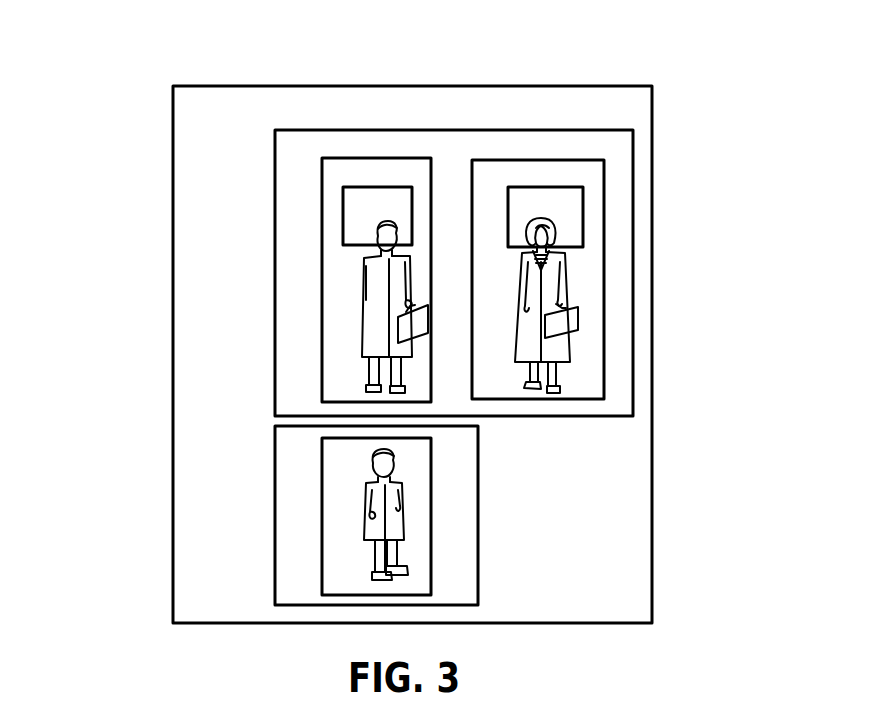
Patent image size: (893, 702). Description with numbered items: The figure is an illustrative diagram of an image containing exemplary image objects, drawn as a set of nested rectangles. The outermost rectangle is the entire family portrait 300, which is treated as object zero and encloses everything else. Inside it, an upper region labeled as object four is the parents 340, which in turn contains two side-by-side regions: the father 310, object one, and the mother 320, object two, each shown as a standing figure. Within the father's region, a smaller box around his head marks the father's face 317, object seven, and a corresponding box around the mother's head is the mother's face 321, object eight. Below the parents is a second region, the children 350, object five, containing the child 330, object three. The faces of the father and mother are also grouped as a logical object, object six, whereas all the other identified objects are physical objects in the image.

The entire family portrait 300 is at (190, 140).
The parents 340 is at (317, 143).
The father 310 is at (368, 170).
The first sub-region 317 is at (392, 200).
The mother 320 is at (585, 173).
The mother's face 321 is at (570, 207).
The child 330 is at (338, 552).
The children 350 is at (290, 564).